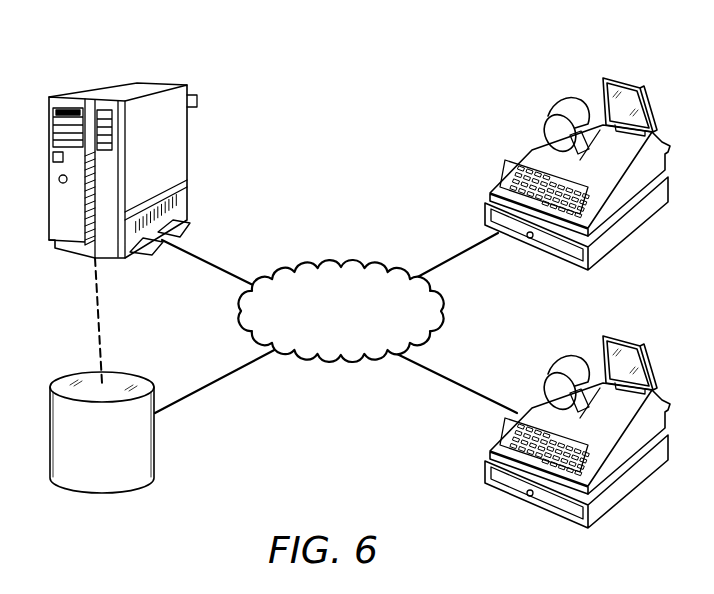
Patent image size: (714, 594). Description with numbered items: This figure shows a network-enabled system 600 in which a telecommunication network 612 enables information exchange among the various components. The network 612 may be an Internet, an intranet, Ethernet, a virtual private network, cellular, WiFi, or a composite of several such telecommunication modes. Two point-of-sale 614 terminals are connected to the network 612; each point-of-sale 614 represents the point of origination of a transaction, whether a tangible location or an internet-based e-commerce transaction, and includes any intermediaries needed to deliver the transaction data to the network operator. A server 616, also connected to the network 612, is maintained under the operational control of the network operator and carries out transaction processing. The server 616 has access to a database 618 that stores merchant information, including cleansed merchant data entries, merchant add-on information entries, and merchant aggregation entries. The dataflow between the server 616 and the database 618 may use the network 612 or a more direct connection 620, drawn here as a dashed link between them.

The network-enabled system 600 is at (270, 104).
The telecommunication network 612 is at (345, 262).
The point-of-sale 614 is at (518, 158).
The server 616 is at (117, 83).
The database 618 is at (110, 493).
The direct connection 620 is at (97, 308).